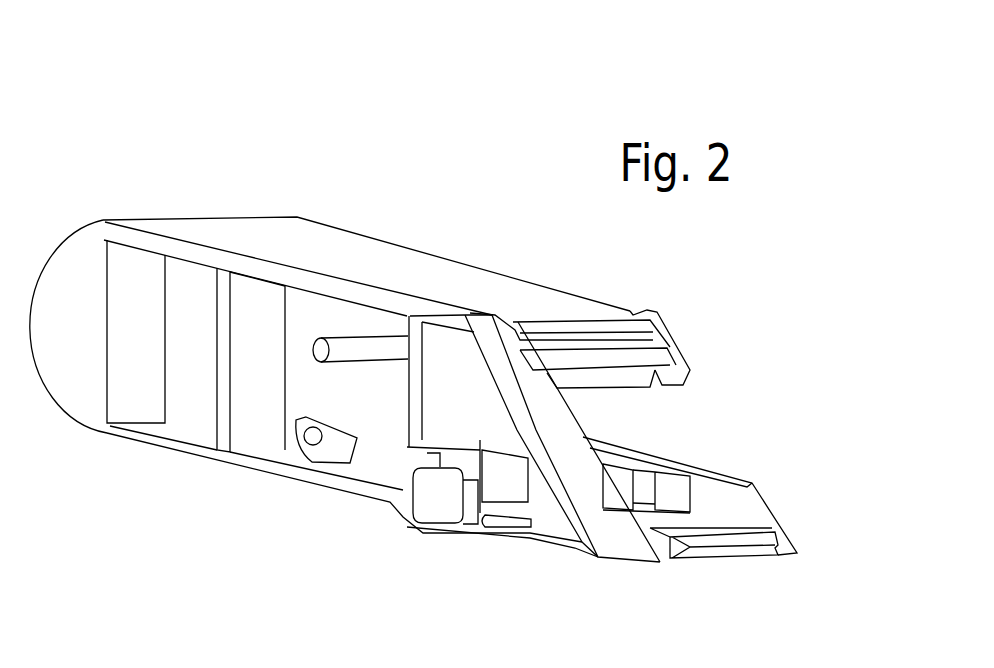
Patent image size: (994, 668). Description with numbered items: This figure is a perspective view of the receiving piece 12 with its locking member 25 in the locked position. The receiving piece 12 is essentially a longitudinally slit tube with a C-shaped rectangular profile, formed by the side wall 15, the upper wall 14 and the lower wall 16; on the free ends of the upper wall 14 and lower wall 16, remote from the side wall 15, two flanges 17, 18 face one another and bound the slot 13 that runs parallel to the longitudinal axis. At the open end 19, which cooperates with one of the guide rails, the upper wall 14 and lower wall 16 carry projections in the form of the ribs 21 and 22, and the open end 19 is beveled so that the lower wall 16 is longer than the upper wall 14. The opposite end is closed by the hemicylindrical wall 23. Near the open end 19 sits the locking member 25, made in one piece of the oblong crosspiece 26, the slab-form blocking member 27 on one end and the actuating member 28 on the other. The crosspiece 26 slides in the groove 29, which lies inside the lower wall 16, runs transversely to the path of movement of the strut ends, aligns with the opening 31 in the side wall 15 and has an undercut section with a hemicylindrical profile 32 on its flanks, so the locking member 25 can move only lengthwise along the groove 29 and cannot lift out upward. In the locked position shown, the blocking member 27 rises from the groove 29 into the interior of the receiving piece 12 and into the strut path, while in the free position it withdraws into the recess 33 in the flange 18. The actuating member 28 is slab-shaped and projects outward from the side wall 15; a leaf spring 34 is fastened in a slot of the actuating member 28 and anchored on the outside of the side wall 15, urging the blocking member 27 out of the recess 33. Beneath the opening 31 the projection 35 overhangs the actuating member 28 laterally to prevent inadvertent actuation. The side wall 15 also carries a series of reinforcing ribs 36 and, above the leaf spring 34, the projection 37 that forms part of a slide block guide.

The receiving piece 12 is at (483, 143).
The slot 13 is at (625, 422).
The upper wall 14 is at (432, 283).
The side wall 15 is at (190, 398).
The lower wall 16 is at (283, 490).
The flange 17 is at (680, 373).
The flange 18 is at (768, 508).
The open end 19 is at (688, 337).
The rib 21 is at (600, 322).
The rib 22 is at (743, 557).
The hemicylindrical wall 23 is at (55, 242).
The locking member 25 is at (442, 508).
The crosspiece 26 is at (477, 540).
The blocking member 27 is at (620, 468).
The actuating member 28 is at (443, 500).
The groove 29 is at (652, 513).
The opening 31 is at (510, 470).
The hemicylindrical profile 32 is at (665, 503).
The recess 33 is at (672, 470).
The leaf spring 34 is at (317, 445).
The projection 35 is at (443, 542).
The ribs 36 is at (257, 303).
The projection 37 is at (360, 347).